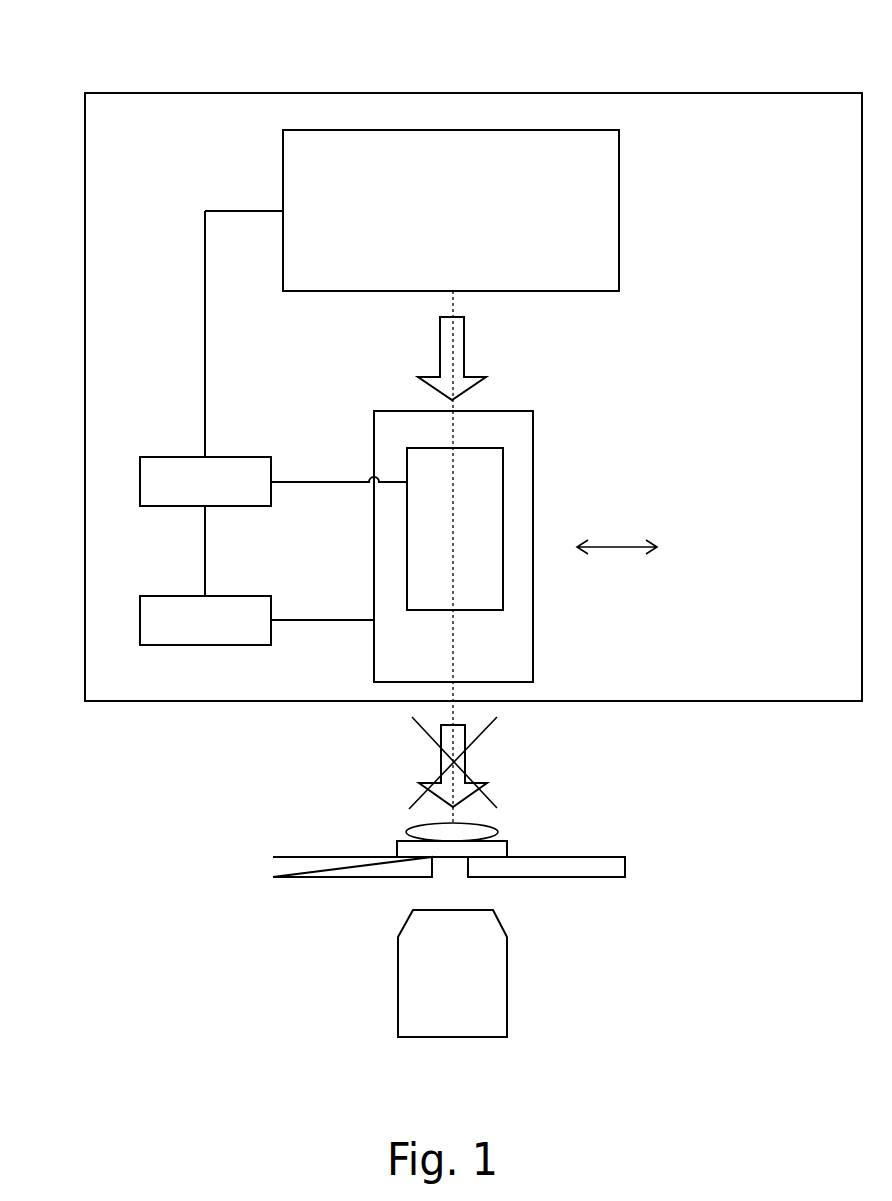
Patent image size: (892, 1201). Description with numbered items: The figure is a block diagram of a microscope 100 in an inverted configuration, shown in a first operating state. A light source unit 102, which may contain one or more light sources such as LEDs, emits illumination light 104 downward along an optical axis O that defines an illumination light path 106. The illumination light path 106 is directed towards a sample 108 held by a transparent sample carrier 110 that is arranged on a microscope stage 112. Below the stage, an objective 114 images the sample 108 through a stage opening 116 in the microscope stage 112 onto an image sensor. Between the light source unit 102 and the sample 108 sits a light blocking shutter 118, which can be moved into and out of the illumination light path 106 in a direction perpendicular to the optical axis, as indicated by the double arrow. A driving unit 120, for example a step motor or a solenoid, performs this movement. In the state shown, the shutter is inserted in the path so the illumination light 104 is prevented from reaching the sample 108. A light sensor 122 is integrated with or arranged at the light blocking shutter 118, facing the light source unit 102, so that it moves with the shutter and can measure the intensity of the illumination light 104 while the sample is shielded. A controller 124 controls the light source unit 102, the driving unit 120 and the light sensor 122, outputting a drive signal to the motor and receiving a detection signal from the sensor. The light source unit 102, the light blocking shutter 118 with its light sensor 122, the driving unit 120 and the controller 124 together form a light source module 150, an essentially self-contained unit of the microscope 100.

The microscope 100 is at (810, 40).
The light source unit 102 is at (619, 253).
The illumination light 104 is at (465, 365).
The illumination light path 106 is at (455, 305).
The sample 108 is at (498, 827).
The transparent sample carrier 110 is at (395, 851).
The microscope stage 112 is at (625, 866).
The objective 114 is at (507, 1012).
The stage opening 116 is at (445, 870).
The light blocking shutter 118 is at (533, 470).
The driving unit 120 is at (160, 598).
The light sensor 122 is at (503, 557).
The controller 124 is at (162, 458).
The light source module 150 is at (836, 702).